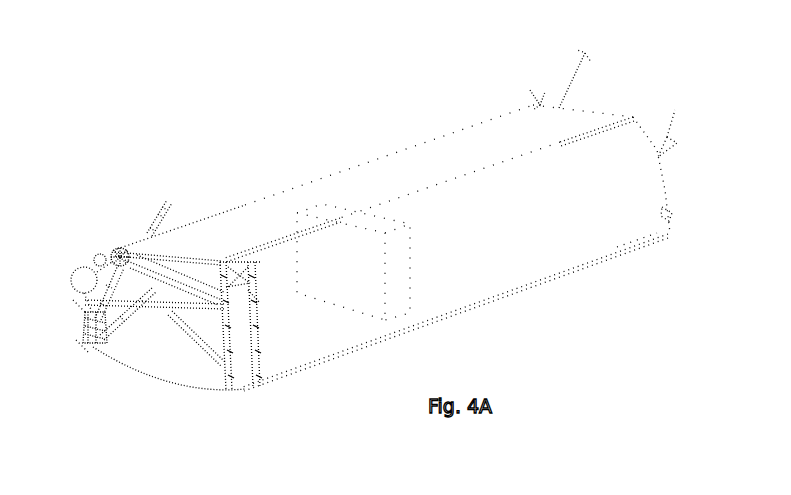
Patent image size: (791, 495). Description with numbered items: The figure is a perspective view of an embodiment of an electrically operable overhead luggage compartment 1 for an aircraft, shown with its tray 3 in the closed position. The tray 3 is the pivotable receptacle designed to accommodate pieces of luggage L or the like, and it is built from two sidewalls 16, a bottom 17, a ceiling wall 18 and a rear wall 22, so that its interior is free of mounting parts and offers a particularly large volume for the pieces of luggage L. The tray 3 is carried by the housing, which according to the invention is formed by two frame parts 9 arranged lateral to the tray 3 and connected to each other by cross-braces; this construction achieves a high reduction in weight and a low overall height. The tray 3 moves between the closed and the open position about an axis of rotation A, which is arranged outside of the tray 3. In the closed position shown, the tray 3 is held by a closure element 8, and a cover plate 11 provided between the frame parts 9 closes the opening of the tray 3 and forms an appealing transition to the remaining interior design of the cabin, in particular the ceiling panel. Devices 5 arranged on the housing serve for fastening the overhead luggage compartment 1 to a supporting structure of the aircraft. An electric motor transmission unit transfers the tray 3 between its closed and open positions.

The overhead luggage compartment 1 is at (613, 52).
The tray 3 is at (615, 232).
The devices 5 is at (532, 97).
The closure element 8 is at (225, 373).
The frame parts 9 is at (127, 302).
The cover plate 11 is at (647, 180).
The sidewalls 16 is at (158, 288).
The bottom 17 is at (522, 293).
The ceiling wall 18 is at (380, 185).
The rear wall 22 is at (237, 203).
The pieces of luggage L is at (330, 213).
The axis of rotation A is at (82, 338).